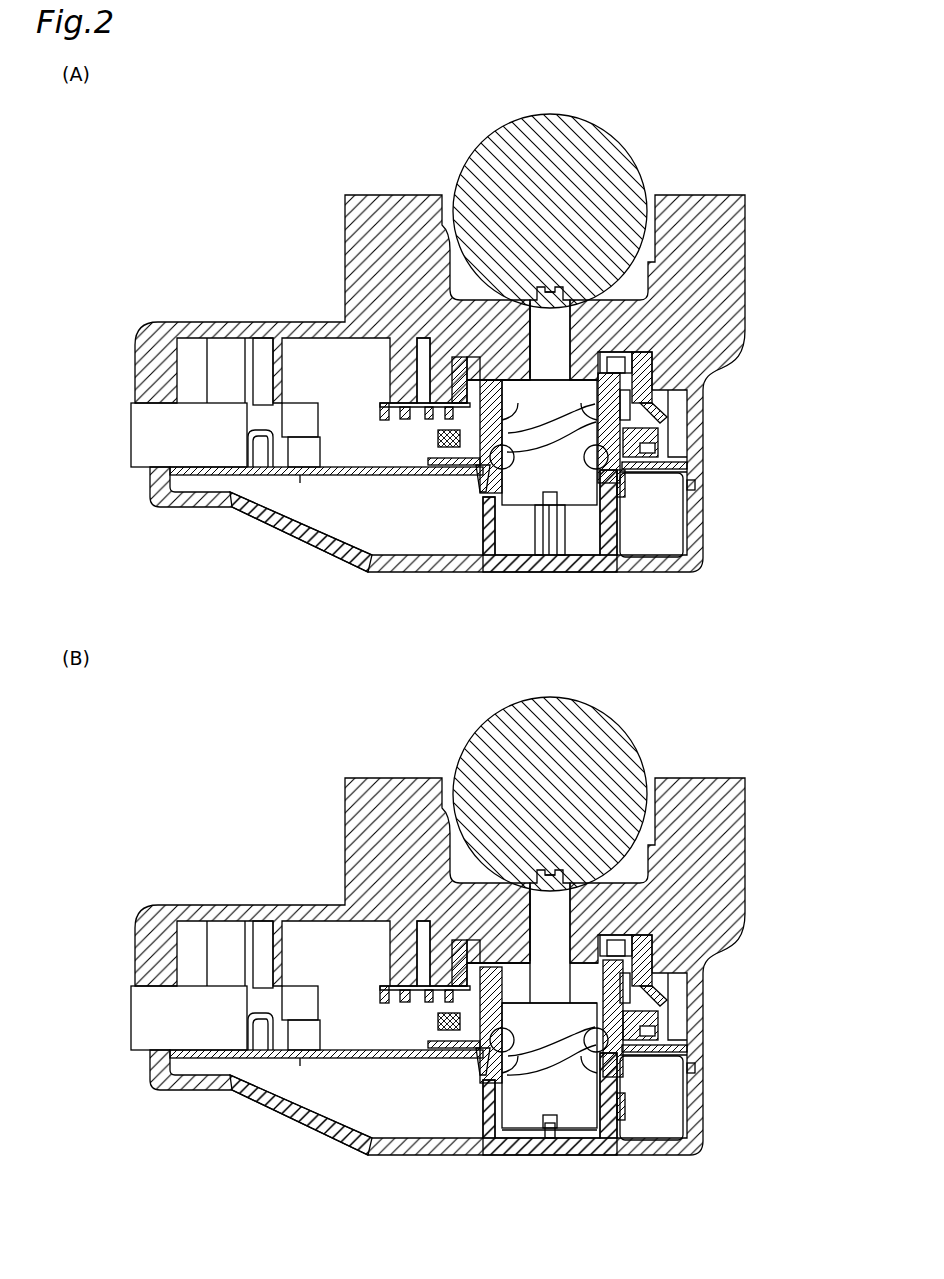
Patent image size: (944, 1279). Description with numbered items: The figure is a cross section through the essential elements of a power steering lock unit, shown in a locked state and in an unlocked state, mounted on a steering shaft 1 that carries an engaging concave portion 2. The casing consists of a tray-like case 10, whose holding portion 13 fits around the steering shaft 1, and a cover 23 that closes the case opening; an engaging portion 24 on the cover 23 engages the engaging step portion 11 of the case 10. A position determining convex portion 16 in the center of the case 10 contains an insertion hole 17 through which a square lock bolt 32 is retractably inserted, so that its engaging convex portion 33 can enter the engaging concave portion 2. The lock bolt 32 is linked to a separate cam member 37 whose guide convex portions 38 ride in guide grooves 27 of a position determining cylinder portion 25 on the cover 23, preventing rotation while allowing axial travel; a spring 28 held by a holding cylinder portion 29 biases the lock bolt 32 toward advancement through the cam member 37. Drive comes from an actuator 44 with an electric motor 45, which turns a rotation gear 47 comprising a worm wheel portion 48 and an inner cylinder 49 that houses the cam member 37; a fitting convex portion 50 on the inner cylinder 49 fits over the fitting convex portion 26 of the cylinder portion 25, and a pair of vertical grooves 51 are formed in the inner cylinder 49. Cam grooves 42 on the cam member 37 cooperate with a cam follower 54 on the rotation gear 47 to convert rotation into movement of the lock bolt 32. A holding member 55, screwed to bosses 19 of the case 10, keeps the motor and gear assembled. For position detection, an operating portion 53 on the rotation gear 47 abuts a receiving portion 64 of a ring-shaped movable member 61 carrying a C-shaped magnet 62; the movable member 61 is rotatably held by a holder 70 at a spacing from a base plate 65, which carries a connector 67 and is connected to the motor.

The steering shaft 1 is at (578, 128).
The engaging concave portion 2 is at (548, 290).
The case 10 is at (140, 326).
The engaging step portion 11 is at (683, 495).
The holding portion 13 is at (694, 200).
The position determining convex portion 16 is at (600, 355).
The insertion hole 17 is at (525, 340).
The bosses 19 is at (395, 363).
The cover 23 is at (250, 515).
The engaging portion 24 is at (695, 483).
The position determining cylinder portion 25 is at (480, 556).
The fitting convex portion 26 is at (485, 510).
The guide grooves 27 is at (590, 558).
The spring 28 is at (530, 558).
The holding cylinder portion 29 is at (552, 560).
The lock bolt 32 is at (545, 318).
The engaging convex portion 33 is at (546, 296).
The cam member 37 is at (480, 490).
The guide convex portions 38 is at (618, 520).
The cam grooves 42 is at (540, 446).
The actuator 44 is at (269, 662).
The electric motor 45 is at (300, 405).
The rotation gear 47 is at (738, 679).
The worm wheel portion 48 is at (645, 373).
The inner cylinder 49 is at (627, 483).
The fitting convex portion 50 is at (506, 498).
The vertical grooves 51 is at (504, 464).
The operating portion 53 is at (524, 691).
The cam follower 54 is at (452, 470).
The holding member 55 is at (688, 414).
The movable member 61 is at (693, 435).
The magnet 62 is at (440, 446).
The receiving portion 64 is at (440, 420).
The base plate 65 is at (330, 476).
The connector 67 is at (138, 456).
The holder 70 is at (690, 463).